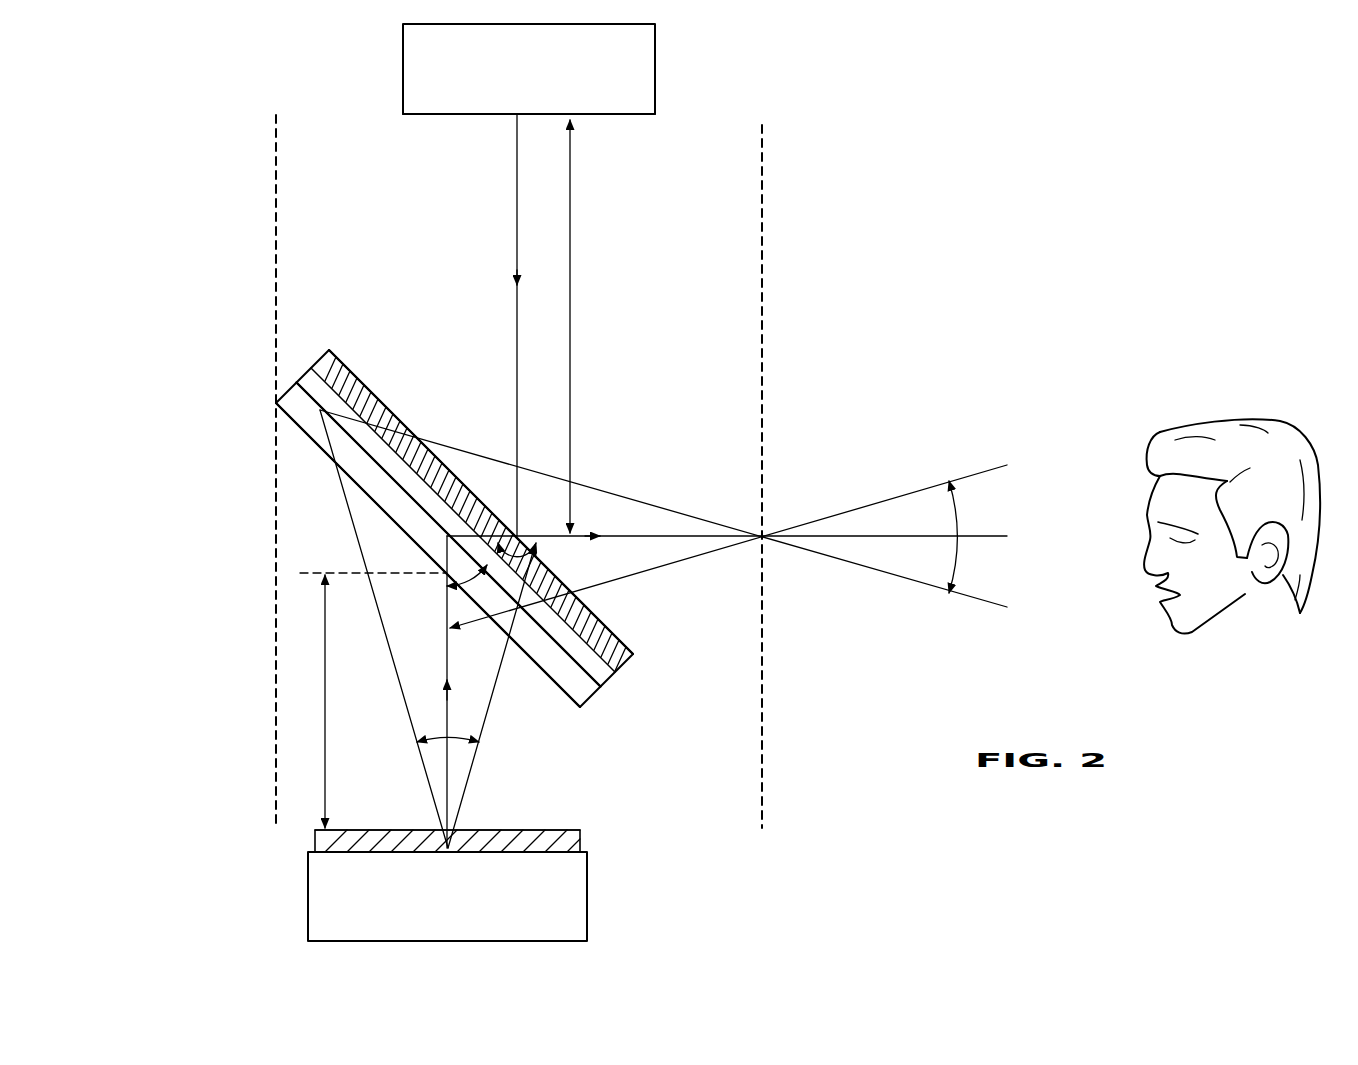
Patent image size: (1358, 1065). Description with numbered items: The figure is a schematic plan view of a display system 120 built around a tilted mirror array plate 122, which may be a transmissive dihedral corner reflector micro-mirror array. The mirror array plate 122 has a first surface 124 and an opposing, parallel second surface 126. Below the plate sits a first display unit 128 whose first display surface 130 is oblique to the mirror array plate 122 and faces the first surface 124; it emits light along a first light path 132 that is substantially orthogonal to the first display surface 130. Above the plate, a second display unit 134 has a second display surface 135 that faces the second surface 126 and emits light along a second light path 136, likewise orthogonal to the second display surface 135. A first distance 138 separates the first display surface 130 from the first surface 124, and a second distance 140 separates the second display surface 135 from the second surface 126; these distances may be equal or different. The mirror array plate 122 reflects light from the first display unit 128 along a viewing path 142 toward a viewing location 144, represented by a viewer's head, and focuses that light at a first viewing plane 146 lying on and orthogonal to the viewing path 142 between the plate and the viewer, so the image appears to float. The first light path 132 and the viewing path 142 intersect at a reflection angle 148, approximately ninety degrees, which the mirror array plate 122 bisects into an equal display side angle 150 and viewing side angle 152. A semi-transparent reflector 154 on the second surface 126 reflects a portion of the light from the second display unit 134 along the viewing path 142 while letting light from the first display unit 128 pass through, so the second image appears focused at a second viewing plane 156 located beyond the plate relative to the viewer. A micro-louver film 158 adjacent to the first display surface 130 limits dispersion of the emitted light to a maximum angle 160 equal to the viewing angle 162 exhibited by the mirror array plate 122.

The display system 120 is at (220, 400).
The mirror array plate 122 is at (313, 423).
The first surface 124 is at (537, 683).
The second surface 126 is at (597, 615).
The first display unit 128 is at (587, 888).
The first display surface 130 is at (582, 832).
The first light path 132 is at (447, 600).
The second display unit 134 is at (655, 82).
The second display surface 135 is at (432, 114).
The second light path 136 is at (516, 255).
The first distance 138 is at (322, 752).
The second distance 140 is at (575, 345).
The viewing path 142 is at (668, 532).
The viewing location 144 is at (1197, 425).
The first viewing plane 146 is at (764, 372).
The reflection angle 148 is at (483, 615).
The display side angle 150 is at (445, 577).
The viewing side angle 152 is at (506, 540).
The reflector 154 is at (338, 368).
The second viewing plane 156 is at (276, 340).
The micro-louver film 158 is at (520, 830).
The maximum angle 160 is at (440, 740).
The viewing angle 162 is at (958, 518).